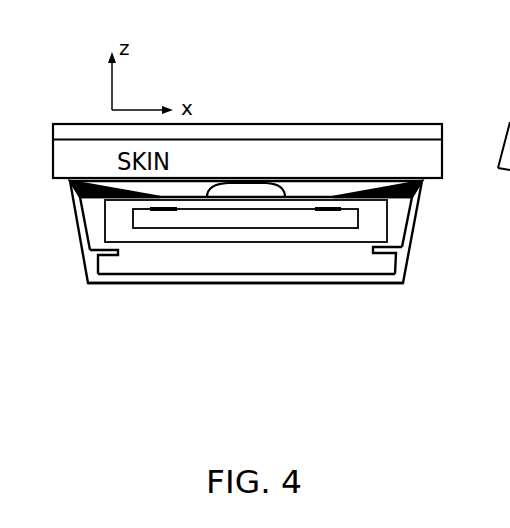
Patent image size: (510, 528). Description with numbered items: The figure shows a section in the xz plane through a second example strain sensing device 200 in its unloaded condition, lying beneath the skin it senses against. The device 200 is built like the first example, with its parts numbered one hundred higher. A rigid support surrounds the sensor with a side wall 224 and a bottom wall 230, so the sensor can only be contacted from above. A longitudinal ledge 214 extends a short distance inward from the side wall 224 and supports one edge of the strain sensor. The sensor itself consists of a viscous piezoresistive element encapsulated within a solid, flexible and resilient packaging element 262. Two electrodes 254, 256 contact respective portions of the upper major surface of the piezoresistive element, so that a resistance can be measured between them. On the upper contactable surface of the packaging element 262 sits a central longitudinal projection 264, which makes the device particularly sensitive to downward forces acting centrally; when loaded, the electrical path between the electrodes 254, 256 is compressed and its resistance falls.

The strain sensing device 200 is at (72, 374).
The longitudinal ledge 214 is at (113, 256).
The side wall 224 is at (78, 233).
The bottom wall 230 is at (367, 283).
The electrode 254 is at (160, 213).
The electrode 256 is at (328, 213).
The packaging element 262 is at (250, 236).
The projection 264 is at (248, 183).